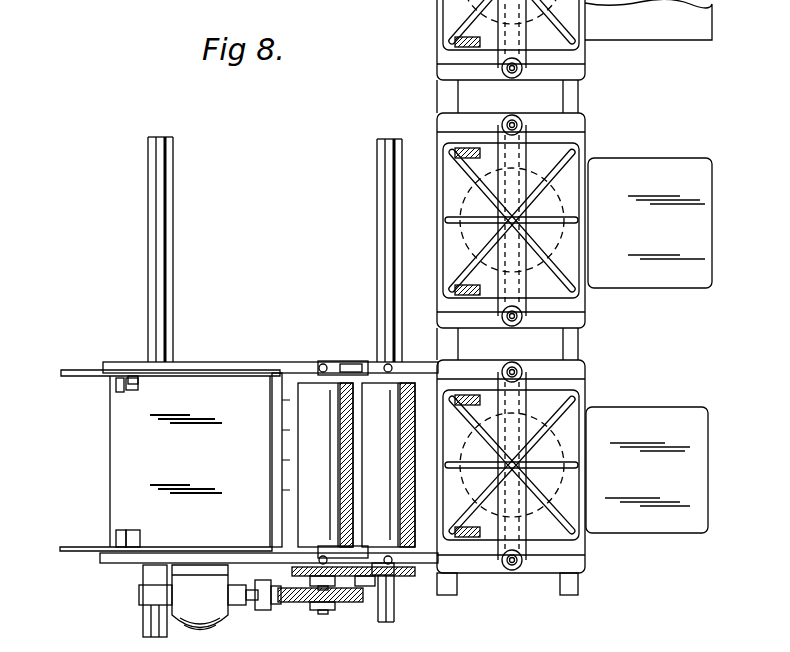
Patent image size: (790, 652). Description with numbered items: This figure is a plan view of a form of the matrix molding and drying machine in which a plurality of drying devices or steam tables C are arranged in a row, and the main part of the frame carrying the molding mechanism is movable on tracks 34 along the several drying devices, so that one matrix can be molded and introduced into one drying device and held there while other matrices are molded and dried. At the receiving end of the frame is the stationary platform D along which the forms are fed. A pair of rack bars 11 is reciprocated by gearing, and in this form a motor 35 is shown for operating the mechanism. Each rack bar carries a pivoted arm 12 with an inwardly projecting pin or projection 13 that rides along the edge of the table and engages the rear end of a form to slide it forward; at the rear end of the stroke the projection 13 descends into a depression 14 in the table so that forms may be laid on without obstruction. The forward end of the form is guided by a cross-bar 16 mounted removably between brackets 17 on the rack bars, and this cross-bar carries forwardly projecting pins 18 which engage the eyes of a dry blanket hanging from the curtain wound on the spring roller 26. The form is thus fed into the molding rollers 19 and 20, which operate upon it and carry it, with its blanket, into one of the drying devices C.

The bar 11 is at (61, 372).
The pivoted arm 12 is at (134, 376).
The pin or projection 13 is at (118, 392).
The depression 14 is at (136, 386).
The cross-bar 16 is at (272, 457).
The brackets 17 is at (297, 376).
The forwardly projecting pins 18 is at (290, 504).
The molding roller 19 is at (325, 465).
The molding roller 20 is at (388, 465).
The roller 26 is at (398, 648).
The tracks 34 is at (165, 198).
The motor 35 is at (210, 601).
The steam table or matrix drying device C is at (577, 57).
The stationary platform D is at (190, 461).